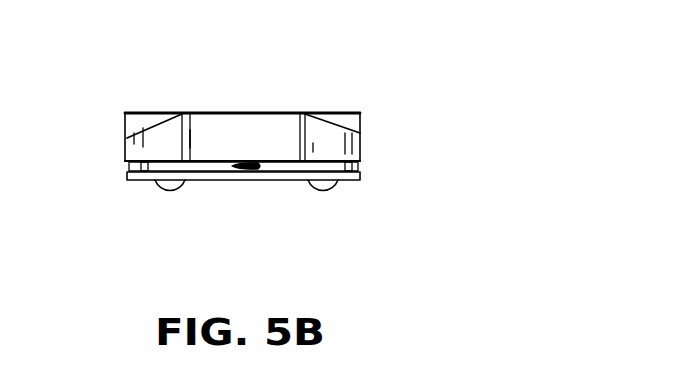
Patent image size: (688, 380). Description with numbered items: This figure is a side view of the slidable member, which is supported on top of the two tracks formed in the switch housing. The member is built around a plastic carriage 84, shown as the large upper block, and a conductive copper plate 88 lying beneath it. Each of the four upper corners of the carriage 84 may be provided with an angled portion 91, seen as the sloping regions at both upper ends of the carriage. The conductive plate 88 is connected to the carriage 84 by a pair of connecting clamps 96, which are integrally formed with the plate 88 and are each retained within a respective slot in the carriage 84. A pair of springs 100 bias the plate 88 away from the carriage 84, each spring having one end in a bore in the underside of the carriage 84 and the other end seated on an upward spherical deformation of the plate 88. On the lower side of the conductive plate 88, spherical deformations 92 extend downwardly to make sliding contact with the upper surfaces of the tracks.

The plastic carriage 84 is at (261, 108).
The angled portion 91 is at (149, 126).
The connecting clamp 96 is at (129, 168).
The conductive copper plate 88 is at (205, 186).
The spring 100 is at (260, 169).
The spherical deformation 92 is at (156, 188).